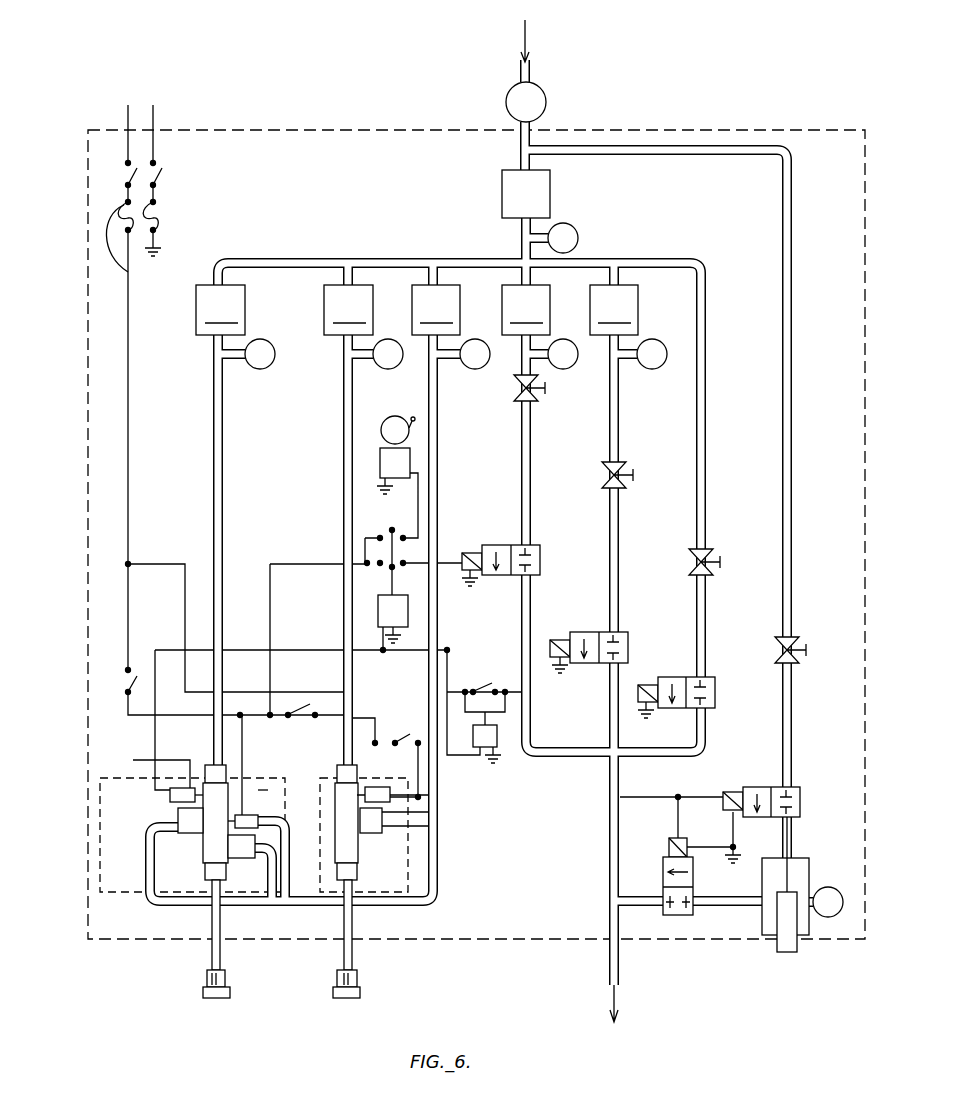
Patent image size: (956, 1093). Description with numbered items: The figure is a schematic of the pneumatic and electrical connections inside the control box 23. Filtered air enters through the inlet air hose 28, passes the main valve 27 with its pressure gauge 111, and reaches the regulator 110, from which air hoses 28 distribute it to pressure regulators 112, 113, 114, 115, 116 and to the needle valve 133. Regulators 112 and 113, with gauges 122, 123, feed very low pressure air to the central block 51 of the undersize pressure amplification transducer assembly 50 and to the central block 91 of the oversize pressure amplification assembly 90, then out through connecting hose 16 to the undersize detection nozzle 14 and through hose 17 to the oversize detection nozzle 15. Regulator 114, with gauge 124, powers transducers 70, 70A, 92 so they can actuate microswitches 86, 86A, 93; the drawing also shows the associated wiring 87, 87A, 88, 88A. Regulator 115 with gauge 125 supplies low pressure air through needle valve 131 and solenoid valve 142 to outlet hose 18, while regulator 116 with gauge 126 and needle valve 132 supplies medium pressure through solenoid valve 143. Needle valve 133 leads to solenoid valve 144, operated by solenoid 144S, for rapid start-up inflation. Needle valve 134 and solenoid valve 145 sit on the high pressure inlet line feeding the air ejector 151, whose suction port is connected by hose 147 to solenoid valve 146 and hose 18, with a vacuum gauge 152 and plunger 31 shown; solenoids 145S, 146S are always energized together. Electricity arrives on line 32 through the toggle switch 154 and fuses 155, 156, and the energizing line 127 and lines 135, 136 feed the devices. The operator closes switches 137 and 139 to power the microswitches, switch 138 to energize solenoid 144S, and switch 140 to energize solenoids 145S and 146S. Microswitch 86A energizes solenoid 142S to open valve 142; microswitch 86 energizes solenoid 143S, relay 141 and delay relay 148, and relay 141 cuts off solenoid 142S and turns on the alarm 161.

The undersize detection nozzle 14 is at (205, 990).
The oversize detection nozzle 15 is at (358, 990).
The connecting hose 16 is at (212, 960).
The hose 17 is at (352, 955).
The outlet hose 18 is at (608, 968).
The control box 23 is at (655, 130).
The main valve 27 is at (546, 100).
The inlet air hose 28 is at (532, 72).
The pressure switch plunger 31 is at (787, 953).
The line 32 is at (128, 118).
The undersize pressure amplification transducer assembly 50 is at (110, 892).
The central block 51 is at (215, 838).
The proximity transducer 70 is at (178, 822).
The contact transducer 70A is at (233, 858).
The microswitch 86 is at (170, 796).
The microswitch 86A is at (258, 830).
The wire 87 is at (155, 736).
The wire 87A is at (245, 752).
The wire 88 is at (133, 761).
The wire 88A is at (318, 760).
The oversize pressure amplification assembly 90 is at (408, 880).
The central block 91 is at (346, 842).
The pneumatic transducer 92 is at (383, 828).
The microswitch 93 is at (391, 798).
The regulator 110 is at (552, 190).
The pressure gauge 111 is at (578, 232).
The pressure regulator 112 is at (220, 310).
The pressure regulator 113 is at (348, 310).
The pressure regulator 114 is at (436, 310).
The pressure regulator 115 is at (526, 310).
The pressure regulator 116 is at (614, 310).
The pressure gauge 122 is at (262, 369).
The pressure gauge 123 is at (388, 369).
The pressure gauge 124 is at (477, 369).
The gauge 125 is at (563, 369).
The pressure gauge 126 is at (652, 369).
The energizing line 127 is at (130, 416).
The needle valve 131 is at (541, 398).
The needle valve 132 is at (626, 486).
The needle valve 133 is at (712, 573).
The needle valve 134 is at (800, 656).
The wire 135 is at (133, 596).
The wire 136 is at (134, 562).
The switch 137 is at (131, 688).
The switch 138 is at (490, 667).
The switch 139 is at (311, 708).
The switch 140 is at (413, 735).
The relay 141 is at (378, 612).
The solenoid valve 142 is at (540, 562).
The solenoid 142S is at (466, 553).
The solenoid valve 143 is at (628, 647).
The solenoid 143S is at (555, 640).
The solenoid valve 144 is at (715, 692).
The solenoid 144S is at (643, 686).
The solenoid valve 145 is at (795, 789).
The solenoid 145S is at (724, 793).
The solenoid valve 146 is at (673, 916).
The solenoid 146S is at (669, 846).
The hose 147 is at (365, 550).
The delay relay 148 is at (497, 742).
The air ejector 151 is at (809, 866).
The vacuum gauge 152 is at (832, 918).
The toggle switch 154 is at (156, 176).
The fuse 155 is at (160, 222).
The fuse 156 is at (128, 270).
The alarm 161 is at (410, 463).